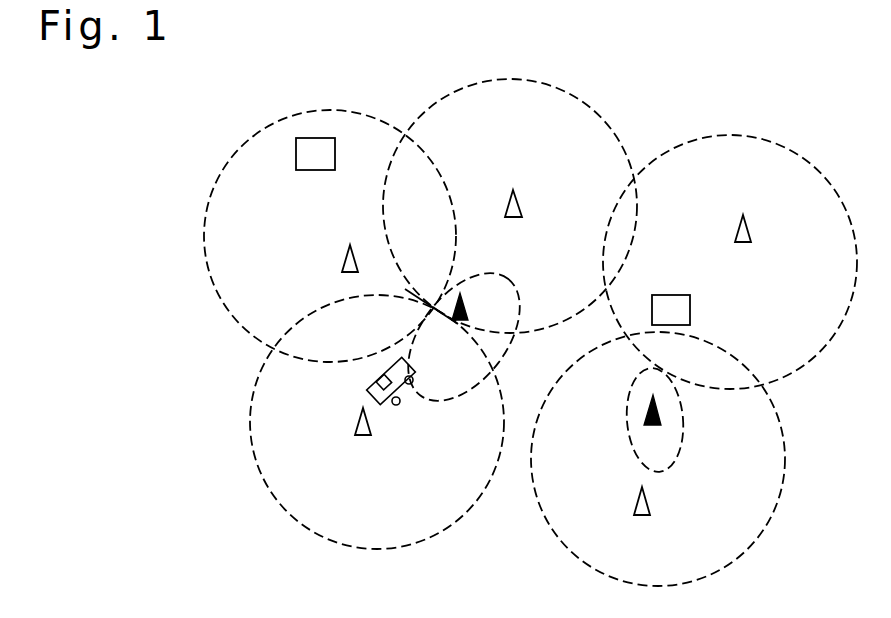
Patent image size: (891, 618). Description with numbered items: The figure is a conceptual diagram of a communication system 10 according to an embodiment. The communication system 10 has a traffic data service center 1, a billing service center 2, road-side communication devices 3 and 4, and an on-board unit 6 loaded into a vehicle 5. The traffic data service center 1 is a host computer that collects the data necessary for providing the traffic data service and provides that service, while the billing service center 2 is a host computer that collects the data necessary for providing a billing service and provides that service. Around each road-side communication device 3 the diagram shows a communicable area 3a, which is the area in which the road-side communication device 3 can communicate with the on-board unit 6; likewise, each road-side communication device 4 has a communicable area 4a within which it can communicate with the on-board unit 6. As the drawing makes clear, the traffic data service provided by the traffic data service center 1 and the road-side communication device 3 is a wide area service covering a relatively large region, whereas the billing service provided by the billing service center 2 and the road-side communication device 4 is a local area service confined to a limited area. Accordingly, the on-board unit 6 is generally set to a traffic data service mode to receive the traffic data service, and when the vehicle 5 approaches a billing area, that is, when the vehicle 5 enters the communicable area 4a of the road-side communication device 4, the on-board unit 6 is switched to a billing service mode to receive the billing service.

The communication system 10 is at (164, 157).
The traffic data service center 1 is at (308, 138).
The billing service center 2 is at (669, 294).
The road-side communication device 3 is at (345, 258).
The communicable area of road-side communication device 3a is at (203, 237).
The road-side communication device 4 is at (463, 306).
The communicable area of road-side communication device 4a is at (493, 348).
The vehicle 5 is at (371, 389).
The on-board unit 6 is at (378, 367).